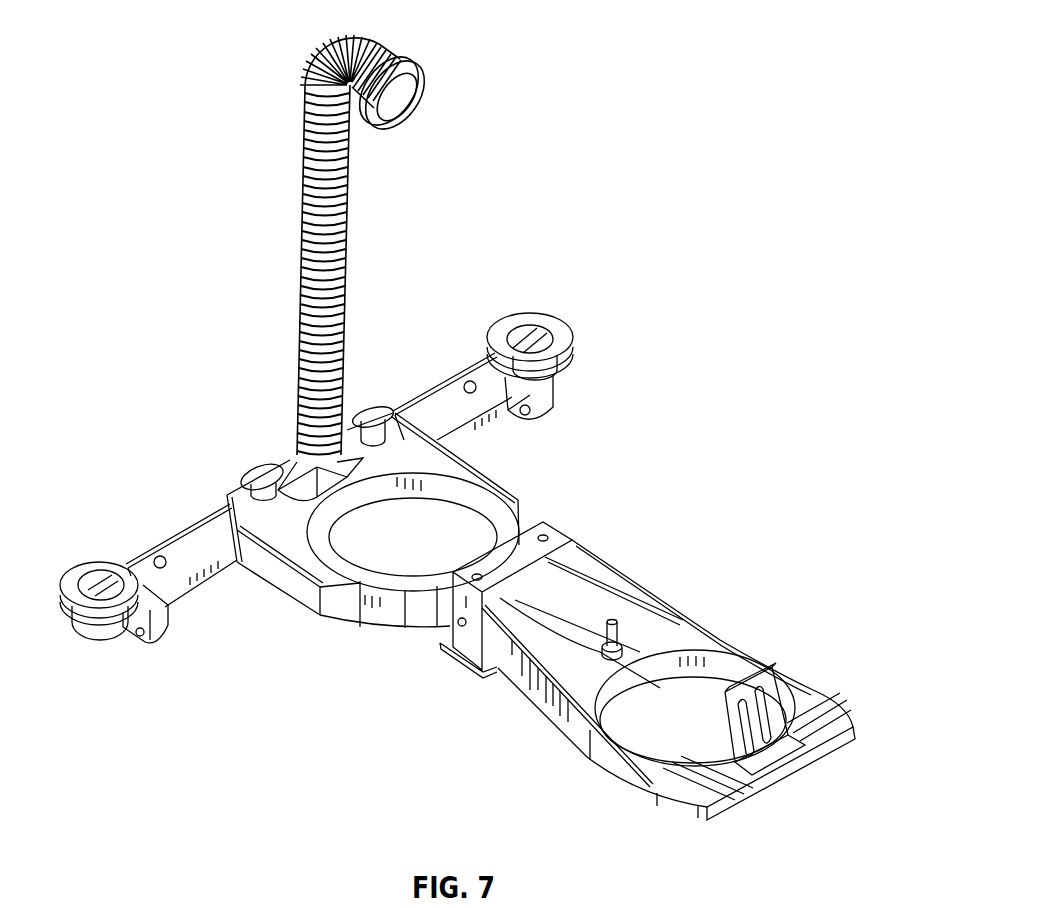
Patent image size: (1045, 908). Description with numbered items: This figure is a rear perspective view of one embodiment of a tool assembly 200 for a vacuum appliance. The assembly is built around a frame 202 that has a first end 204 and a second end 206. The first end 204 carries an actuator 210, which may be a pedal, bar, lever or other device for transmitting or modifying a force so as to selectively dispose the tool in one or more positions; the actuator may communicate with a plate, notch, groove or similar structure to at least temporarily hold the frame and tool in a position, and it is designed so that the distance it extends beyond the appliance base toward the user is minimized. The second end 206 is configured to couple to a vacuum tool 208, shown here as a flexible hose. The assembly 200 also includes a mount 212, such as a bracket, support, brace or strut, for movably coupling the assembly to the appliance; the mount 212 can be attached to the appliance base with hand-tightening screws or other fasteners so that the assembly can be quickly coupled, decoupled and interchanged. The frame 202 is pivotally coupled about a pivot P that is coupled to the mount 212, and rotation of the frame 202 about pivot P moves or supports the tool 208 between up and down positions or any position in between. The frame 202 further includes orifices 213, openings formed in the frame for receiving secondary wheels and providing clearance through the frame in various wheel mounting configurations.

The tool assembly 200 is at (682, 38).
The frame 202 is at (515, 492).
The first end 204 is at (832, 700).
The second end 206 is at (395, 415).
The vacuum tool 208 is at (196, 525).
The actuator 210 is at (777, 755).
The mount 212 is at (557, 540).
The orifice 213 is at (330, 540).
The pivot P is at (460, 624).